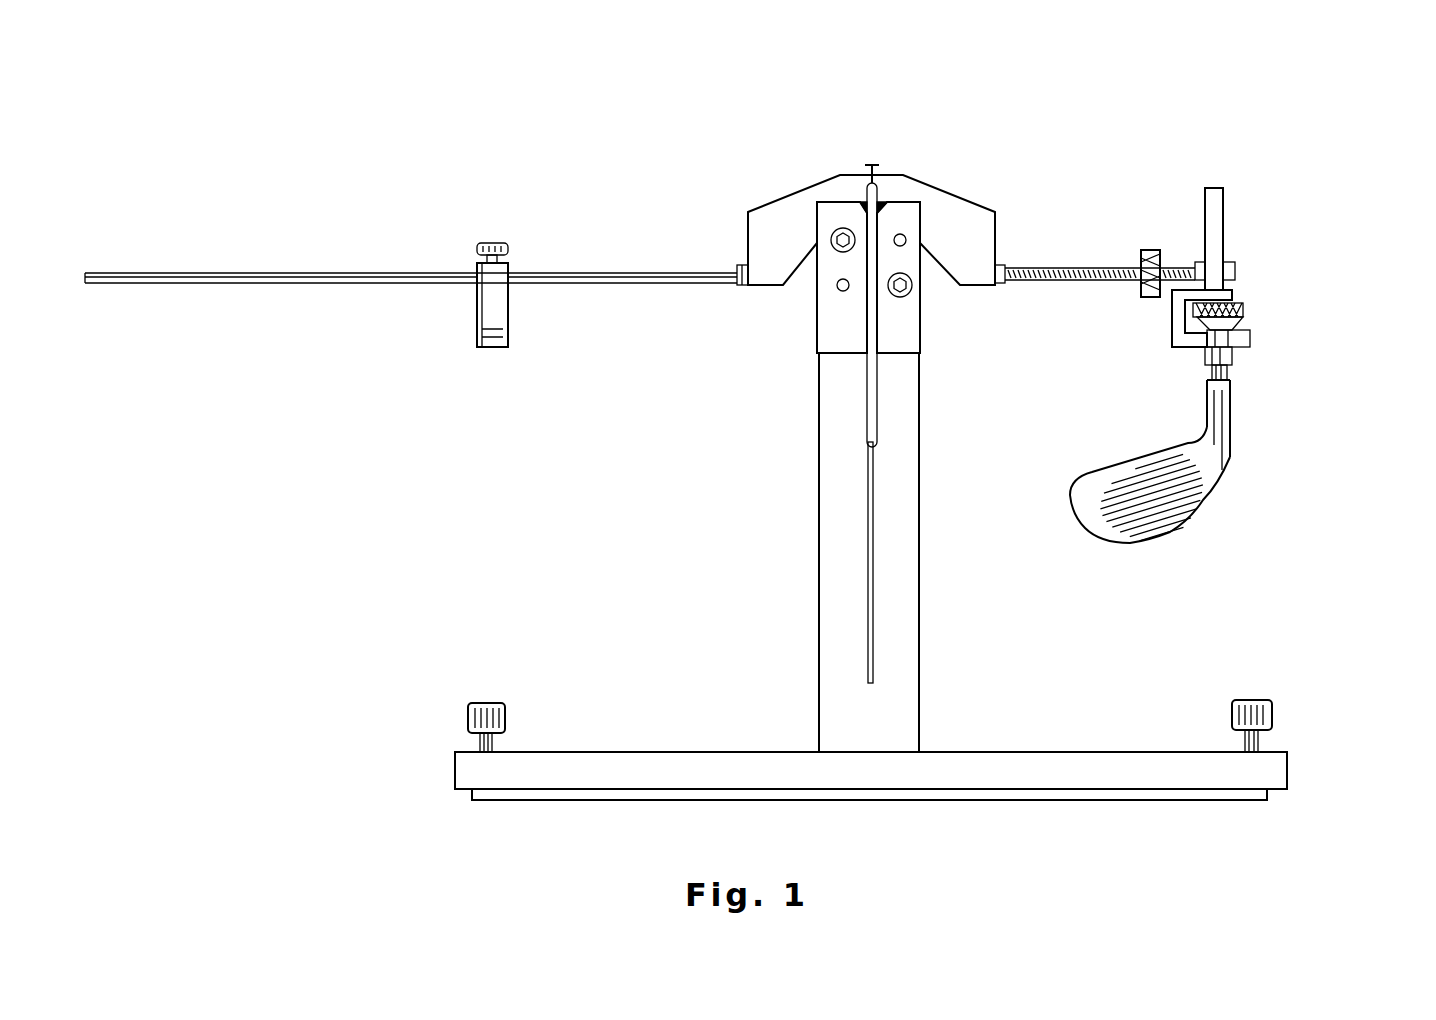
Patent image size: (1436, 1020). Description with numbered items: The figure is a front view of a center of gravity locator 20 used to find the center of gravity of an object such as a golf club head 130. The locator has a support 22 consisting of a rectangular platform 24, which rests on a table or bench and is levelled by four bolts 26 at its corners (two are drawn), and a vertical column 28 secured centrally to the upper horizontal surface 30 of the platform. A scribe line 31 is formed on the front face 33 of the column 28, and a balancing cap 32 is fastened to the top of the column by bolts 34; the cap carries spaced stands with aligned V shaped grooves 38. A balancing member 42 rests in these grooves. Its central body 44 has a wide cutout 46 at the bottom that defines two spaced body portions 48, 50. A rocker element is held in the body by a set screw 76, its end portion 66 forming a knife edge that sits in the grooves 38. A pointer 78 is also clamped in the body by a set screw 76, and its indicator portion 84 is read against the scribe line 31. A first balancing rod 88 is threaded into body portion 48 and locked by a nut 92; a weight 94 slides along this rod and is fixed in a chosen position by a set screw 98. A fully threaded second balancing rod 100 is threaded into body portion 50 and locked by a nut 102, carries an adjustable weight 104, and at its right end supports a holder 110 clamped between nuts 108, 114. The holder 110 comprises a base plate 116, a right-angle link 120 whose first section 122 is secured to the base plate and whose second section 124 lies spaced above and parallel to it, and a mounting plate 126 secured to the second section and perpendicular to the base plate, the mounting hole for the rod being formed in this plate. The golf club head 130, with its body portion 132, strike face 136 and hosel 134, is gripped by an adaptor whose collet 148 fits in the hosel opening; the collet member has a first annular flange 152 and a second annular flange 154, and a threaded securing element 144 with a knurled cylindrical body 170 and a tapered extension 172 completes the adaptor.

The center of gravity locator 20 is at (571, 138).
The support 22 is at (746, 656).
The platform 24 is at (468, 770).
The bolts 26 is at (475, 716).
The column 28 is at (920, 598).
The upper horizontal surface 30 is at (1072, 752).
The scribe line 31 is at (873, 503).
The balancing cap 32 is at (813, 342).
The front face 33 is at (900, 512).
The bolts 34 is at (838, 254).
The V shaped grooves 38 is at (860, 205).
The balancing member 42 is at (774, 141).
The central body 44 is at (759, 204).
The wide cutout 46 is at (790, 283).
The body portion 48 is at (760, 257).
The body portion 50 is at (977, 278).
The end portion 66 is at (862, 208).
The set screw 76 is at (880, 165).
The pointer 78 is at (864, 416).
The indicator portion 84 is at (877, 370).
The first balancing rod 88 is at (375, 268).
The nut 92 is at (740, 290).
The weight 94 is at (498, 317).
The set screw 98 is at (481, 250).
The second balancing rod 100 is at (1058, 268).
The nut 102 is at (1000, 265).
The adjustable weight 104 is at (1143, 253).
The nut 108 is at (1200, 262).
The holder 110 is at (1217, 156).
The nut 114 is at (1235, 263).
The base plate 116 is at (1250, 341).
The right-angle link 120 is at (1169, 318).
The first section 122 is at (1178, 330).
The second section 124 is at (1233, 300).
The mounting plate 126 is at (1214, 194).
The golf club head 130 is at (1133, 502).
The body portion 132 is at (1085, 470).
The hosel 134 is at (1232, 407).
The strike face 136 is at (1122, 518).
The securing element 144 is at (1249, 307).
The collet 148 is at (1230, 373).
The first annular flange 152 is at (1208, 357).
The second annular flange 154 is at (1250, 333).
The cylindrical body 170 is at (1235, 305).
The tapered extension 172 is at (1240, 322).